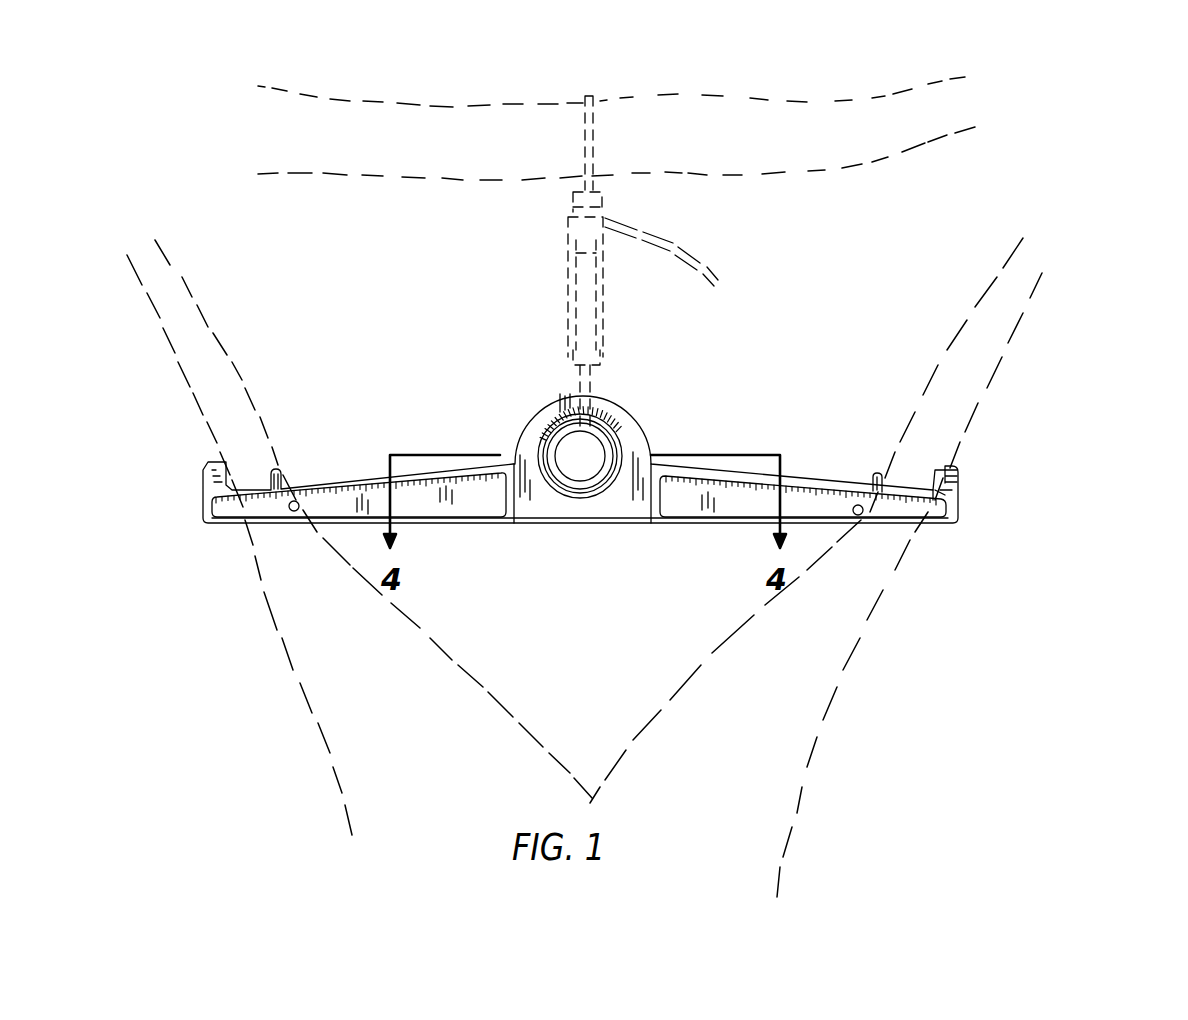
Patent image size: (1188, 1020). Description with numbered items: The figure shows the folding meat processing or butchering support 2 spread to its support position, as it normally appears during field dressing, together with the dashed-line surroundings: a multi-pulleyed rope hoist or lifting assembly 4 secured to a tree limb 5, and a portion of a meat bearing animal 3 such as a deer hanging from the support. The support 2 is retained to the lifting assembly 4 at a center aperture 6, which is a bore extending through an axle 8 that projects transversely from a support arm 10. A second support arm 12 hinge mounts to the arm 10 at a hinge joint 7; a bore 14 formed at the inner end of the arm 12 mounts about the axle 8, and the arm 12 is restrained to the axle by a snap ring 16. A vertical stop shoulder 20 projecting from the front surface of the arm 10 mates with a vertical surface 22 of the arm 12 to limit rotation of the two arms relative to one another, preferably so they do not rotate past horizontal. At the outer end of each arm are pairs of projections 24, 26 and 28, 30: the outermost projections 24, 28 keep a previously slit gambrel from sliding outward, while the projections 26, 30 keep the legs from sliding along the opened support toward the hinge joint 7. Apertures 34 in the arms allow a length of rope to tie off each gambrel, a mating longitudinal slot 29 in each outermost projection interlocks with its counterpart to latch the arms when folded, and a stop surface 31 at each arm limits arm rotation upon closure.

The meat processing support 2 is at (712, 394).
The meat bearing animal 3 is at (806, 800).
The lifting assembly 4 is at (572, 305).
The tree limb 5 is at (831, 170).
The center aperture 6 is at (606, 457).
The hinge joint 7 is at (630, 406).
The axle 8 is at (553, 422).
The support arm 10 is at (366, 472).
The second support arm 12 is at (797, 500).
The bore 14 is at (582, 490).
The snap ring 16 is at (601, 424).
The vertical stop shoulder 20 is at (500, 505).
The vertical surface 22 is at (516, 500).
The outermost projection 24 is at (207, 470).
The projection 26 is at (285, 485).
The outermost projection 28 is at (950, 465).
The longitudinal slot 29 is at (946, 468).
The projection 30 is at (880, 474).
The stop surface 31 is at (953, 480).
The aperture 34 is at (292, 511).